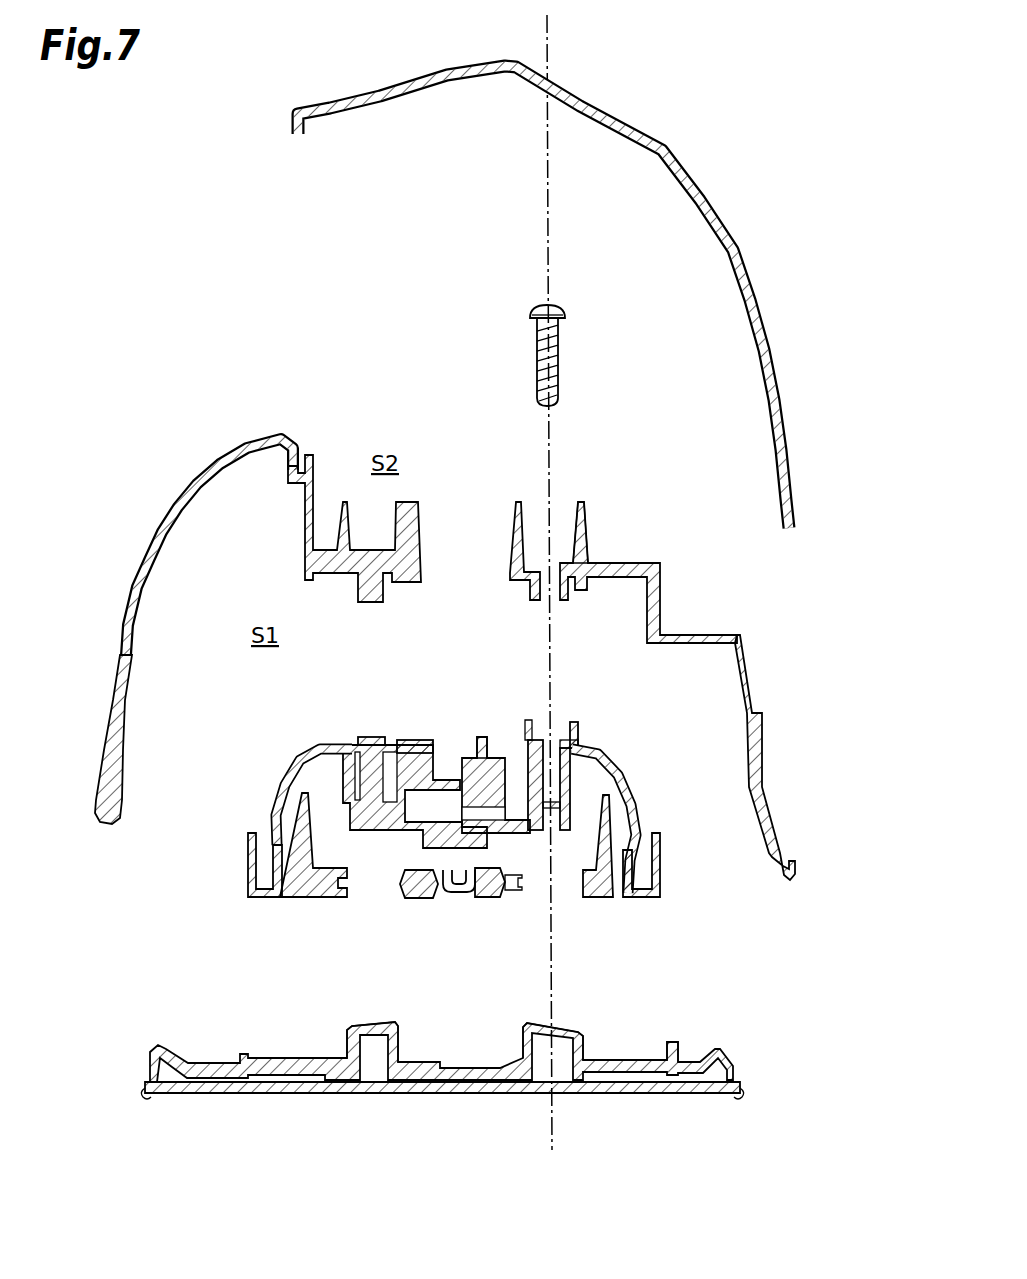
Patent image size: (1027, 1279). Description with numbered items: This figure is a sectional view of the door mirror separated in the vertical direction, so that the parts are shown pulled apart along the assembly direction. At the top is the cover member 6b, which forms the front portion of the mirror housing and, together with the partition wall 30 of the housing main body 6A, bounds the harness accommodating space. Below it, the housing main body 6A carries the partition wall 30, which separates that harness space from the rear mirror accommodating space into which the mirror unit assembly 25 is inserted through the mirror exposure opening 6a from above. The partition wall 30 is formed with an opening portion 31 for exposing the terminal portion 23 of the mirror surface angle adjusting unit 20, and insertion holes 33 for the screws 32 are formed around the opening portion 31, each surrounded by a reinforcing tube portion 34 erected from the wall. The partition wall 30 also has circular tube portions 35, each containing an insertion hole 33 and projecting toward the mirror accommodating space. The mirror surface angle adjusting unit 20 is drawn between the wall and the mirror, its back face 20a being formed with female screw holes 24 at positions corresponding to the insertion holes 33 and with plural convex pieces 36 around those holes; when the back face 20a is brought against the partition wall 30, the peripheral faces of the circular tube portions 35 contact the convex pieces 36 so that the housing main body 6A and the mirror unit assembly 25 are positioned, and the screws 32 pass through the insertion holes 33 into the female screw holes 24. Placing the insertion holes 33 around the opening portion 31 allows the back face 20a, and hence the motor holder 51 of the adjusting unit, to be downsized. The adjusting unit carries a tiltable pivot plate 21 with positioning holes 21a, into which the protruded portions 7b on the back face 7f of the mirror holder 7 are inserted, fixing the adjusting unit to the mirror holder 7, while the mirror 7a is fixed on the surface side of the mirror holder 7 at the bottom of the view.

The mirror exposure opening 6a is at (180, 815).
The cover member 6b is at (688, 175).
The housing main body 6A is at (750, 676).
The mirror holder 7 is at (178, 1025).
The mirror 7a is at (427, 1095).
The protruded portion 7b is at (348, 1040).
The back face 7f is at (657, 1058).
The mirror surface angle adjusting unit 20 is at (427, 816).
The back face 20a is at (367, 737).
The pivot plate 21 is at (662, 855).
The positioning hole 21a is at (370, 902).
The terminal portion 23 is at (478, 718).
The female screw hole 24 is at (556, 780).
The mirror unit assembly 25 is at (130, 922).
The partition wall 30 is at (620, 563).
The opening portion 31 is at (463, 576).
The screw 32 is at (560, 358).
The insertion hole 33 is at (556, 597).
The reinforcing tube portion 34 is at (587, 532).
The circular tube portion 35 is at (528, 590).
The convex piece 36 is at (579, 734).
The motor holder 51 is at (302, 762).